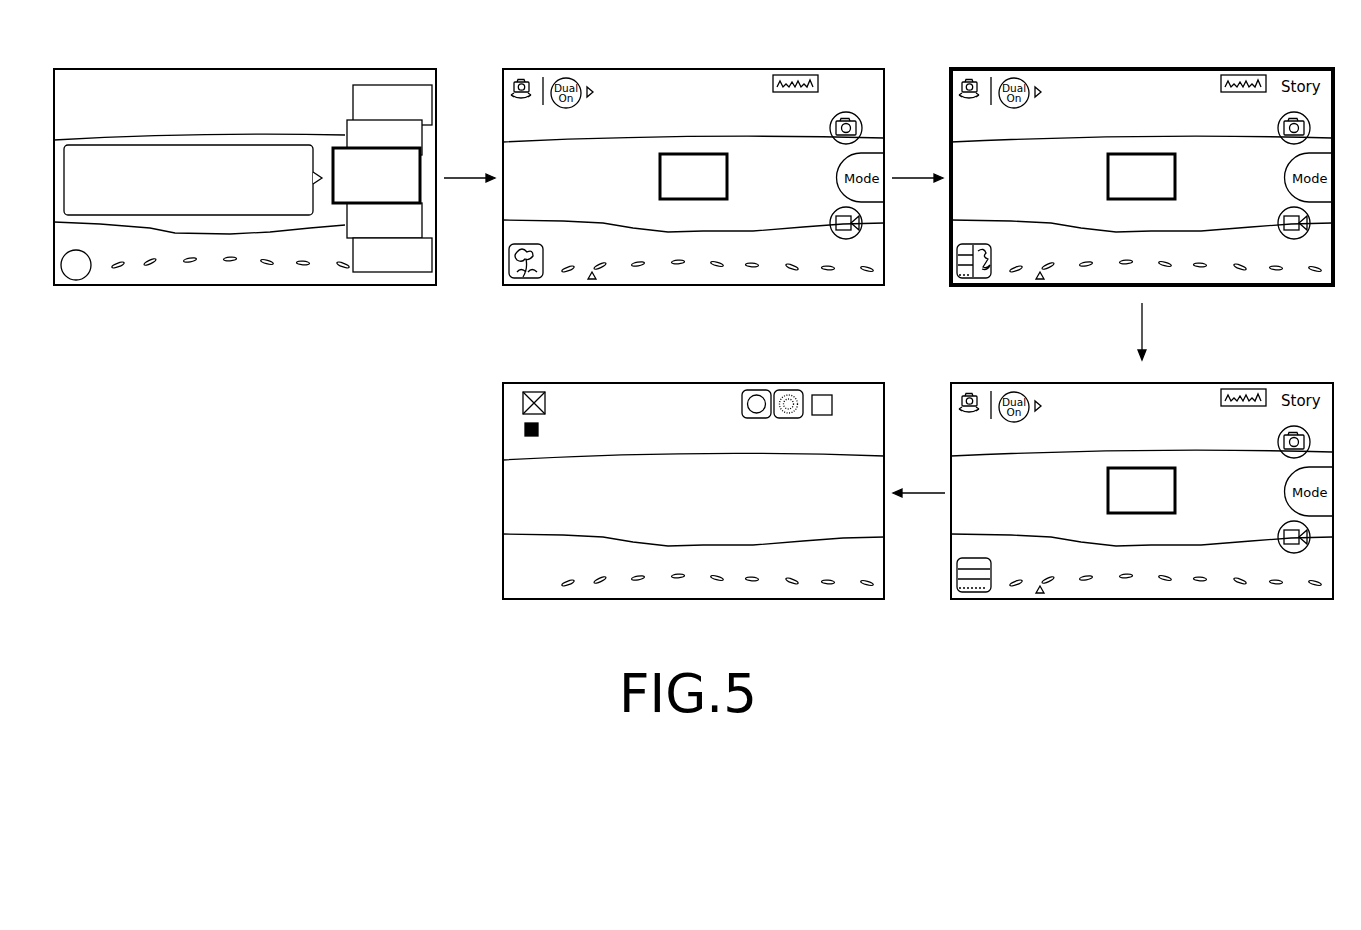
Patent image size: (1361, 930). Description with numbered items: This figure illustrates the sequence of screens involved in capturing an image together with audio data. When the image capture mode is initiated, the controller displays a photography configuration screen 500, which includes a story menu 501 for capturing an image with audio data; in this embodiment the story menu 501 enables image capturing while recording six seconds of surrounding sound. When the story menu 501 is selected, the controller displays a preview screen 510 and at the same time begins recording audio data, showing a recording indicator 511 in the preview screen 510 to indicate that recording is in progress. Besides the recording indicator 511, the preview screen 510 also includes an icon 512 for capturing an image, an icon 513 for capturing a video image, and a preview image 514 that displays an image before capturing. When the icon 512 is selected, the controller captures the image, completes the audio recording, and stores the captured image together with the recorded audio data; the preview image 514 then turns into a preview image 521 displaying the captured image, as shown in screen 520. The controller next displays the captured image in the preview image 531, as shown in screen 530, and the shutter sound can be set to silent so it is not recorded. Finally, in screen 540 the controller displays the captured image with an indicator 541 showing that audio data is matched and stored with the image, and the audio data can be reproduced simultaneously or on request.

The photography configuration screen 500 is at (274, 154).
The story menu 501 is at (423, 184).
The preview screen 510 is at (721, 178).
The recording indicator 511 is at (797, 75).
The icon to capture an image 512 is at (862, 120).
The icon to capture a video image 513 is at (848, 240).
The preview image 514 is at (521, 279).
The screen 520 is at (1142, 178).
The preview image 521 is at (970, 279).
The screen 530 is at (1142, 493).
The preview image 531 is at (970, 593).
The screen 540 is at (664, 468).
The indicator 541 is at (524, 429).